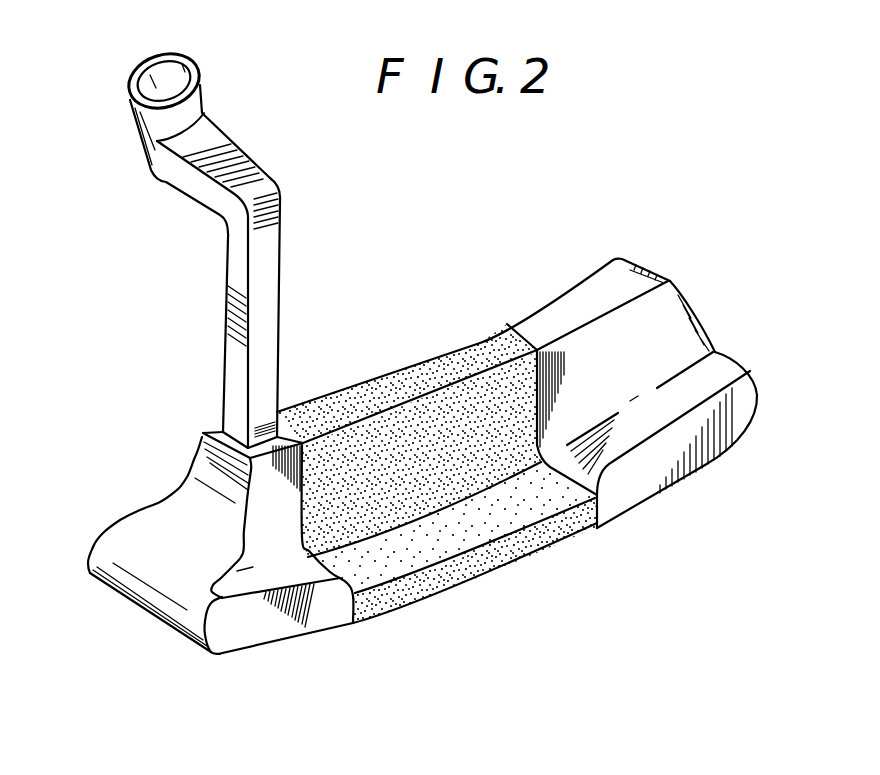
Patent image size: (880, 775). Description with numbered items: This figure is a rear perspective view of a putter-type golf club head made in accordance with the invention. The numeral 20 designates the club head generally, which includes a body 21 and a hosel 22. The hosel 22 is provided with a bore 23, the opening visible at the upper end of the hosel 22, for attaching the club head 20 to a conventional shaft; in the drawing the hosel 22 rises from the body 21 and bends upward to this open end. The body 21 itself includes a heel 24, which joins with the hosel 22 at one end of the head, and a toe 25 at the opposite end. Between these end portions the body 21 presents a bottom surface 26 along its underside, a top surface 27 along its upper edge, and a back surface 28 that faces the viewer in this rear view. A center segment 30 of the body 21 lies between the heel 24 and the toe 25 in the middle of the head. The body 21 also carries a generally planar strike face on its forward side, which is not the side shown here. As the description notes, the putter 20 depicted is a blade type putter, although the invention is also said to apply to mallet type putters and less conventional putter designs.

The putter-type club head 20 is at (708, 266).
The body 21 is at (448, 607).
The hosel 22 is at (218, 316).
The bore 23 is at (163, 72).
The heel 24 is at (181, 474).
The toe 25 is at (698, 470).
The bottom surface 26 is at (580, 540).
The top surface 27 is at (473, 350).
The back surface 28 is at (470, 541).
The center segment 30 is at (387, 430).